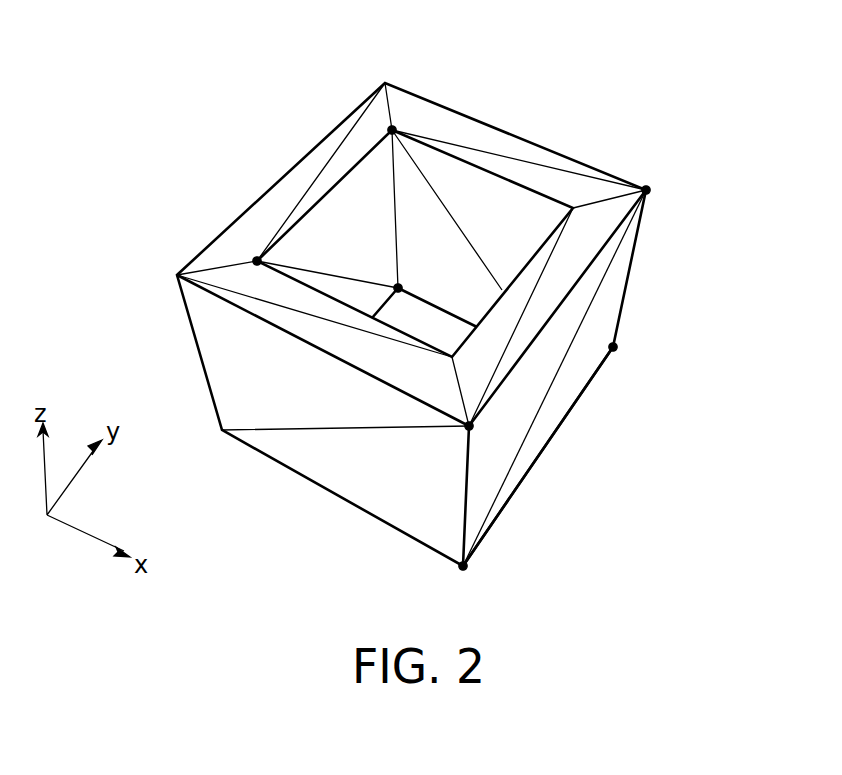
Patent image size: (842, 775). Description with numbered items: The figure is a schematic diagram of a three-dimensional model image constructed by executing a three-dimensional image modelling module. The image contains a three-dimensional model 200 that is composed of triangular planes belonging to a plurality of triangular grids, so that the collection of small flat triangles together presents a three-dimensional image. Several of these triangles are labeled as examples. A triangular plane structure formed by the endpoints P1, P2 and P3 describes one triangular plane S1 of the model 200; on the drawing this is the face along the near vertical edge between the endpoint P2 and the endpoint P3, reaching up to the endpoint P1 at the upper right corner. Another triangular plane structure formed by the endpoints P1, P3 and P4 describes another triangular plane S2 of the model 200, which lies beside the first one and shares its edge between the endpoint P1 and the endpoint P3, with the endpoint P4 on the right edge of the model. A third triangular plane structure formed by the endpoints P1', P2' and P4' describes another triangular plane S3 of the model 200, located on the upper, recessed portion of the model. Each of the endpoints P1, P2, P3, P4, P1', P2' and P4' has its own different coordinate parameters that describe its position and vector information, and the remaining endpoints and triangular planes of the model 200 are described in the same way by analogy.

The 3D model 200 is at (713, 592).
The triangular plane S1 is at (485, 477).
The triangular plane S2 is at (528, 450).
The triangular plane S3 is at (335, 247).
The endpoint P1 is at (673, 178).
The endpoint P2 is at (435, 445).
The endpoint P3 is at (467, 569).
The endpoint P4 is at (642, 357).
The endpoint P1' is at (429, 94).
The endpoint P2' is at (198, 235).
The endpoint P4' is at (419, 258).